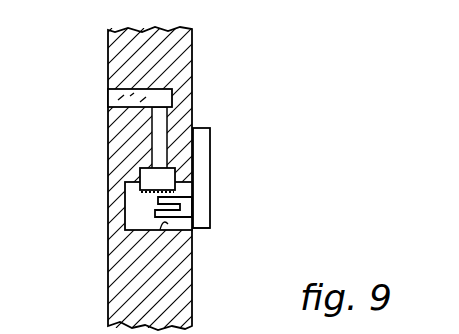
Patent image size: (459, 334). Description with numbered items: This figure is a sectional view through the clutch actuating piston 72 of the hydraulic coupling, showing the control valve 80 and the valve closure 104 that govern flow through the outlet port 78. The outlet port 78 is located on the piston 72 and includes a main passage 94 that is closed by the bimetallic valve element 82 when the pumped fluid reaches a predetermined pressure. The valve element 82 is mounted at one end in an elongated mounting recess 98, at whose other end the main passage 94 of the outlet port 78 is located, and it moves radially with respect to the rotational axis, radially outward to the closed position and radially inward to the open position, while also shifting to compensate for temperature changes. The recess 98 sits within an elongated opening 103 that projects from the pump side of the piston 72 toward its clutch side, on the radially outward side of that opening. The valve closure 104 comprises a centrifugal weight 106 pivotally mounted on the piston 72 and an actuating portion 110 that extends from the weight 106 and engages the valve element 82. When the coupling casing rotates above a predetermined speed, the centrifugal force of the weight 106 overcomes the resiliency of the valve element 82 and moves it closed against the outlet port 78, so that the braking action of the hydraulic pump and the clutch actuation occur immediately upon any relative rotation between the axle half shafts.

The clutch actuating piston 72 is at (182, 40).
The outlet port 78 is at (170, 133).
The main passage 94 is at (152, 148).
The mounting recess 98 is at (139, 174).
The valve element 82 is at (140, 190).
The control valve 80 is at (147, 198).
The centrifugal weight 106 is at (204, 140).
The valve closure 104 is at (218, 176).
The actuating portion 110 is at (196, 228).
The elongated opening 103 is at (160, 230).